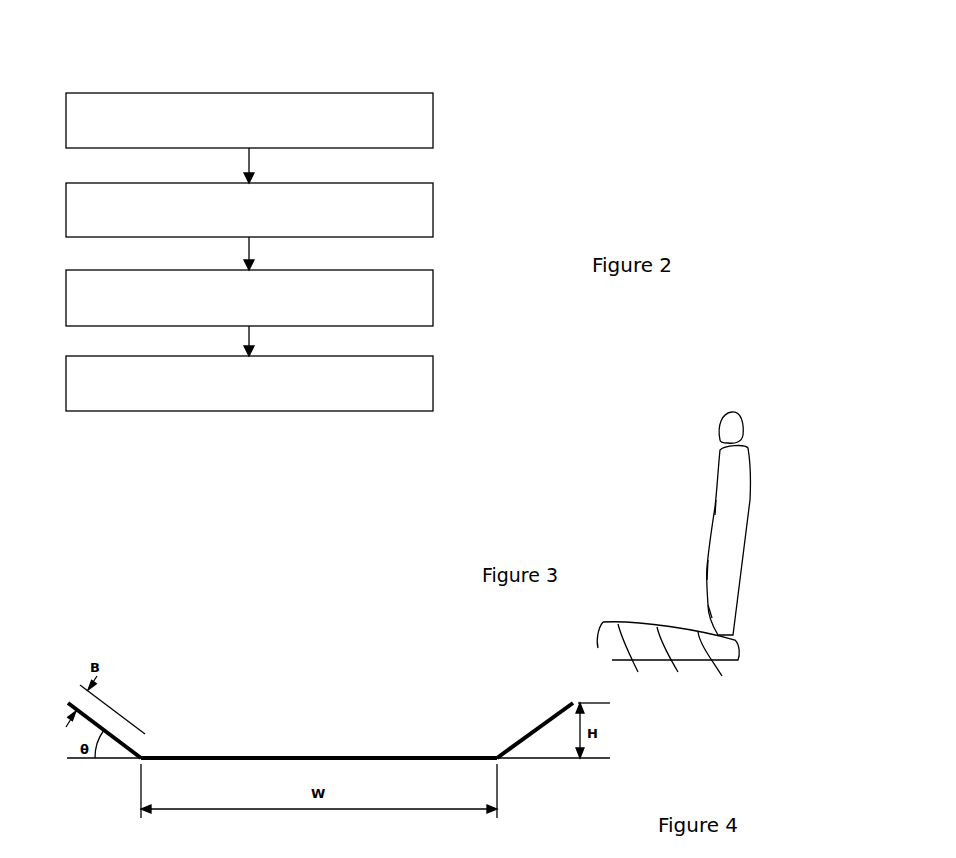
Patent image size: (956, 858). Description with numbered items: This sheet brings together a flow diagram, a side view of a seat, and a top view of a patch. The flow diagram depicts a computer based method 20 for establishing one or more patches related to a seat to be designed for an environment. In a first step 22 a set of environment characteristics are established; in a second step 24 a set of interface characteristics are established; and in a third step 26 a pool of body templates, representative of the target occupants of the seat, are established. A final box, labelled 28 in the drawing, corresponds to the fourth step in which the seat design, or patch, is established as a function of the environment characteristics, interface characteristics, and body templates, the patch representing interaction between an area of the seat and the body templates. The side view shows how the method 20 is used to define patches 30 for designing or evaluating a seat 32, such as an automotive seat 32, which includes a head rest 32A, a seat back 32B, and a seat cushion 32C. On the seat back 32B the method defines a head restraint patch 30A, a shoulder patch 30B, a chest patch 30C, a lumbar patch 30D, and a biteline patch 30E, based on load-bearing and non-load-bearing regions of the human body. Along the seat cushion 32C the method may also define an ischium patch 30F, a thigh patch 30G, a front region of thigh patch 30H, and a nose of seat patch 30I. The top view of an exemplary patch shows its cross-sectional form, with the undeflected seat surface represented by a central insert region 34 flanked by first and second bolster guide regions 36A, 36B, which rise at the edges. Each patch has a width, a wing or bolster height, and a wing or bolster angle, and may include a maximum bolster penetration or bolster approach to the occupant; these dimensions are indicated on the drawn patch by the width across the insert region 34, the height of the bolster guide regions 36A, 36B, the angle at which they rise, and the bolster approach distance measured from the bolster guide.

In FIG. 2, the computer based method 20 is at (290, 215).
In FIG. 2, the first step 22 is at (433, 105).
In FIG. 2, the second step 24 is at (433, 195).
In FIG. 2, the third step 26 is at (433, 282).
In FIG. 2, the establish seat design step 28 is at (433, 367).
In FIG. 3, the patch 30 is at (638, 511).
In FIG. 3, the head restraint patch 30A is at (718, 430).
In FIG. 3, the shoulder patch 30B is at (718, 473).
In FIG. 3, the chest patch 30C is at (715, 514).
In FIG. 3, the lumbar patch 30D is at (708, 572).
In FIG. 3, the biteline patch 30E is at (712, 615).
In FIG. 3, the ischium patch 30F is at (726, 666).
In FIG. 3, the thigh patch 30G is at (687, 664).
In FIG. 3, the front region of thigh patch 30H is at (644, 657).
In FIG. 3, the nose of seat patch 30I is at (593, 632).
In FIG. 3, the seat 32 is at (804, 534).
In FIG. 3, the head rest 32A is at (745, 432).
In FIG. 3, the seat back 32B is at (750, 520).
In FIG. 3, the seat cushion 32C is at (740, 660).
In FIG. 4, the insert region 34 is at (318, 757).
In FIG. 4, the first bolster guide region 36A is at (143, 748).
In FIG. 4, the second bolster guide region 36B is at (521, 740).